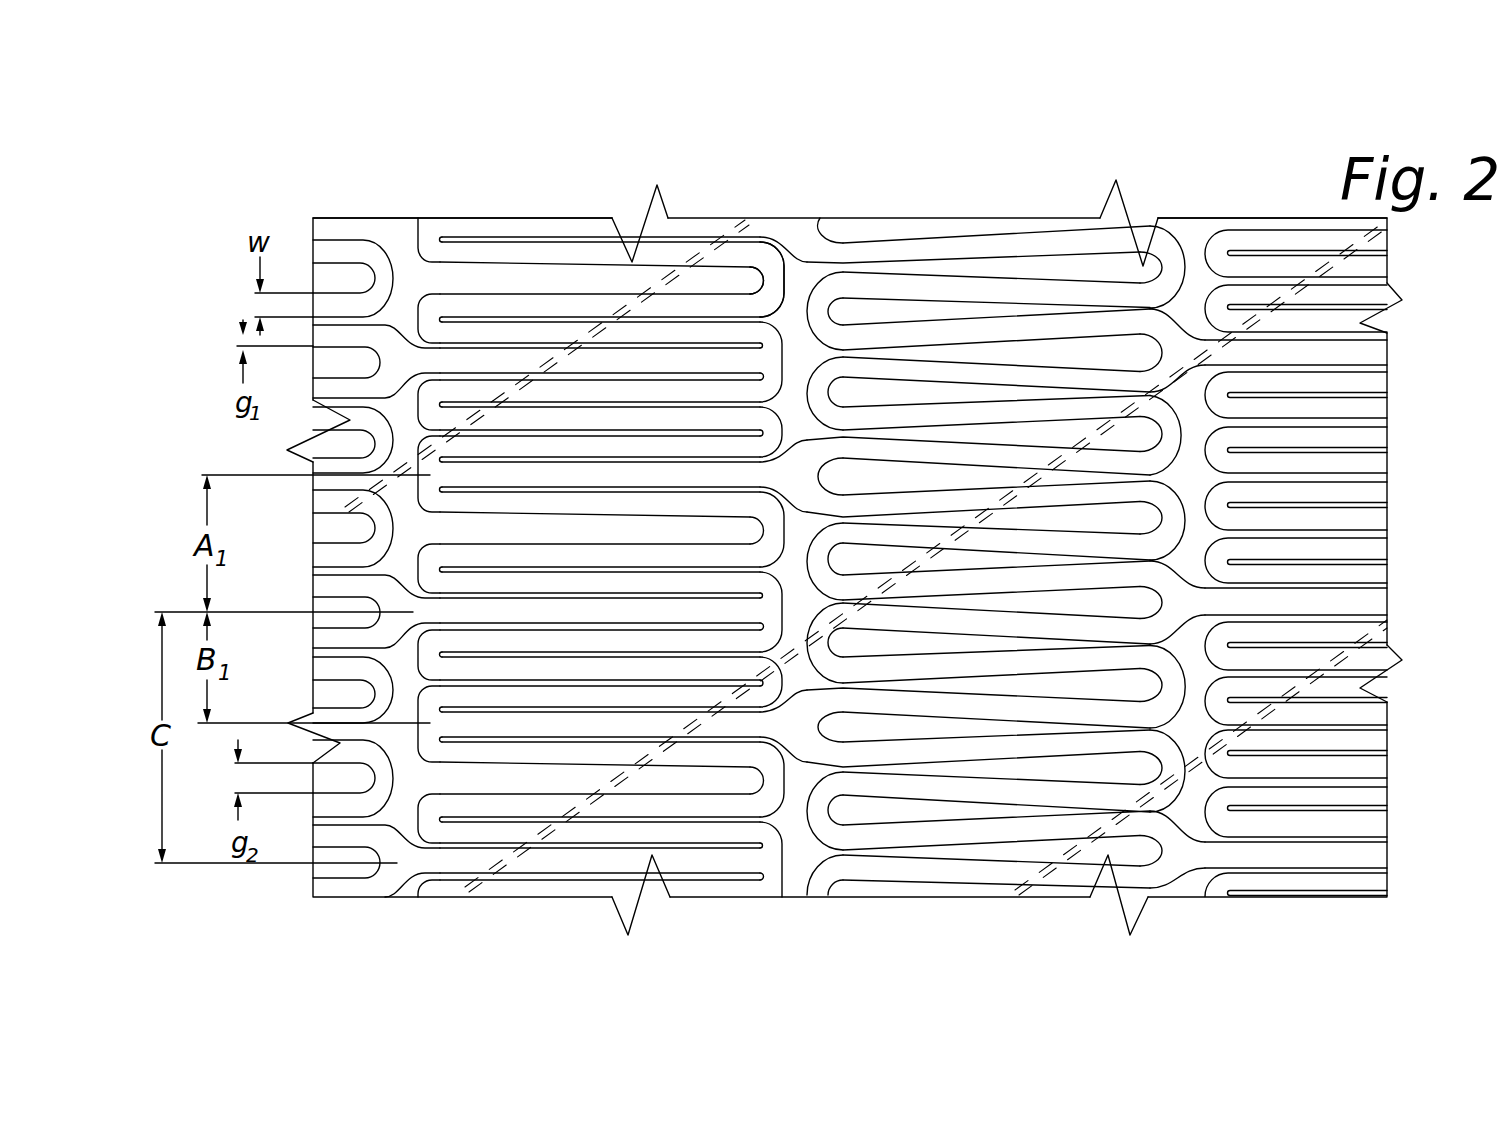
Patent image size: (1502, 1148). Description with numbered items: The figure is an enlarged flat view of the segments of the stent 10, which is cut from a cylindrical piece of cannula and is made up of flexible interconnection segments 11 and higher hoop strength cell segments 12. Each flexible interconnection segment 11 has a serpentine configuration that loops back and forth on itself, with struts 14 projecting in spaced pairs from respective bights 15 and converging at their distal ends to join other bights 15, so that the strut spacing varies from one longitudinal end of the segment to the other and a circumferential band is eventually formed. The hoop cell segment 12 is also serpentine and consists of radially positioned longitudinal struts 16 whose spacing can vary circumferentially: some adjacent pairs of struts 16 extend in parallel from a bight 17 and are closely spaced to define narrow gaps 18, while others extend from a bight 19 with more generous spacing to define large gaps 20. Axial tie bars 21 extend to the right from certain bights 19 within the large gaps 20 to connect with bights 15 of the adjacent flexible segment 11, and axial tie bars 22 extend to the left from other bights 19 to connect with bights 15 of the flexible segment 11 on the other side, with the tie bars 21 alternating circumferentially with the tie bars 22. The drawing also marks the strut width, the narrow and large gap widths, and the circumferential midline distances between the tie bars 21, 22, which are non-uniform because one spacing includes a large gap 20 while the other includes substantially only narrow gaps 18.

The stent 10 is at (790, 201).
The flexible interconnection segment 11 is at (344, 225).
The hoop cell segment 12 is at (625, 240).
The strut 14 is at (1057, 288).
The bight 15 is at (838, 300).
The longitudinal strut 16 is at (670, 300).
The bight 17 is at (435, 300).
The narrow gap 18 is at (287, 450).
The bight 19 is at (777, 282).
The large gap 20 is at (463, 392).
The axial tie bar 21 is at (500, 473).
The axial tie bar 22 is at (722, 863).